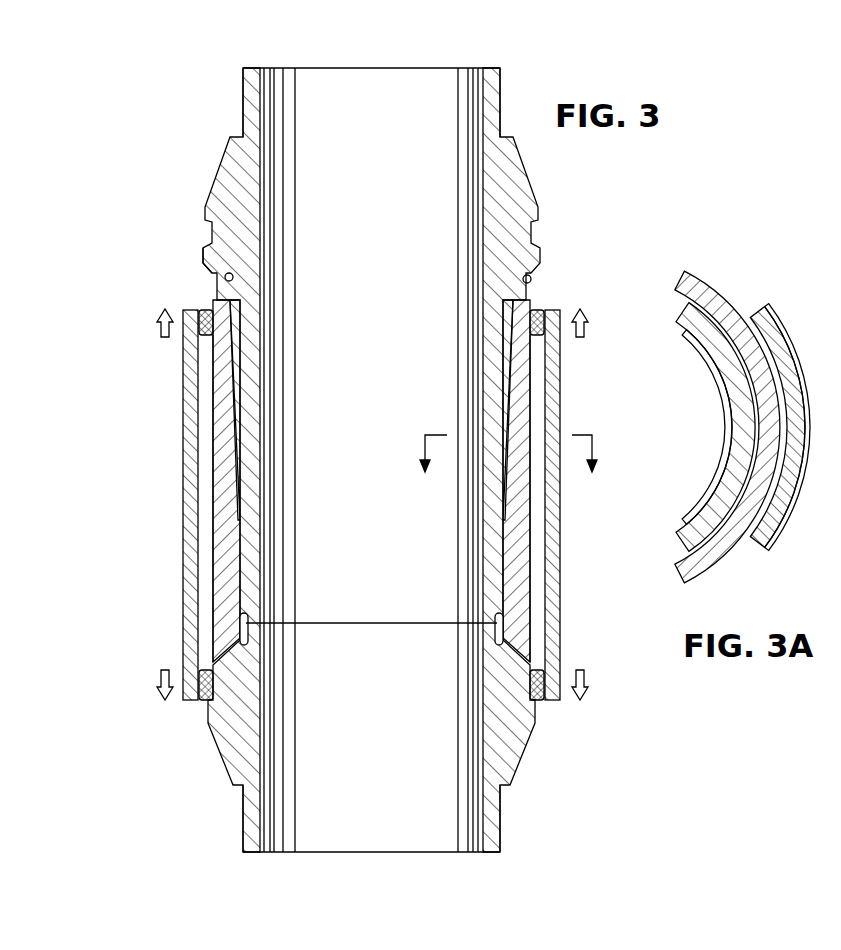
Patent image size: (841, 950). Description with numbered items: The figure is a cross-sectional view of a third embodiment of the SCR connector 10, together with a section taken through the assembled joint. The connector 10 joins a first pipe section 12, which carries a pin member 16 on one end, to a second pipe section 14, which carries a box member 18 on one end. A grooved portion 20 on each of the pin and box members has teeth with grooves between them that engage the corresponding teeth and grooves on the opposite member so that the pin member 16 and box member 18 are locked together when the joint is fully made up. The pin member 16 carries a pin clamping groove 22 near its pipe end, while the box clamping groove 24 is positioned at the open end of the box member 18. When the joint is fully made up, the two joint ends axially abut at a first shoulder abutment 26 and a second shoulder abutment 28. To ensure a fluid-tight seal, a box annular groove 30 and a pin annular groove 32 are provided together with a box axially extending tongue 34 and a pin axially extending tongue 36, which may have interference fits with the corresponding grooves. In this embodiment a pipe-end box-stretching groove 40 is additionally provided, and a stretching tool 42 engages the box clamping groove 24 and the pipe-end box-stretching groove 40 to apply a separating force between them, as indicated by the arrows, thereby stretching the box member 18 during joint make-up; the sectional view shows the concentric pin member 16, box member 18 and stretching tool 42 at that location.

In FIG. 3, the SCR connector 10 is at (206, 106).
In FIG. 3, the first pipe section 12 is at (253, 118).
In FIG. 3, the second pipe section 14 is at (253, 815).
In FIG. 3, the pin member 16 is at (240, 370).
In FIG. 3A, the pin member 16 is at (725, 373).
In FIG. 3, the box member 18 is at (222, 434).
In FIG. 3A, the box member 18 is at (693, 296).
In FIG. 3, the grooved portion 20 is at (232, 483).
In FIG. 3, the pin clamping groove 22 is at (537, 243).
In FIG. 3, the box clamping groove 24 is at (545, 328).
In FIG. 3, the first shoulder abutment 26 is at (533, 279).
In FIG. 3, the second shoulder abutment 28 is at (242, 622).
In FIG. 3, the box annular groove 30 is at (233, 658).
In FIG. 3, the pin annular groove 32 is at (210, 258).
In FIG. 3, the box axially extending tongue 34 is at (224, 280).
In FIG. 3, the pin axially extending tongue 36 is at (505, 634).
In FIG. 3, the pipe-end box-stretching groove 40 is at (545, 682).
In FIG. 3, the stretching tool 42 is at (552, 383).
In FIG. 3A, the stretching tool 42 is at (792, 367).